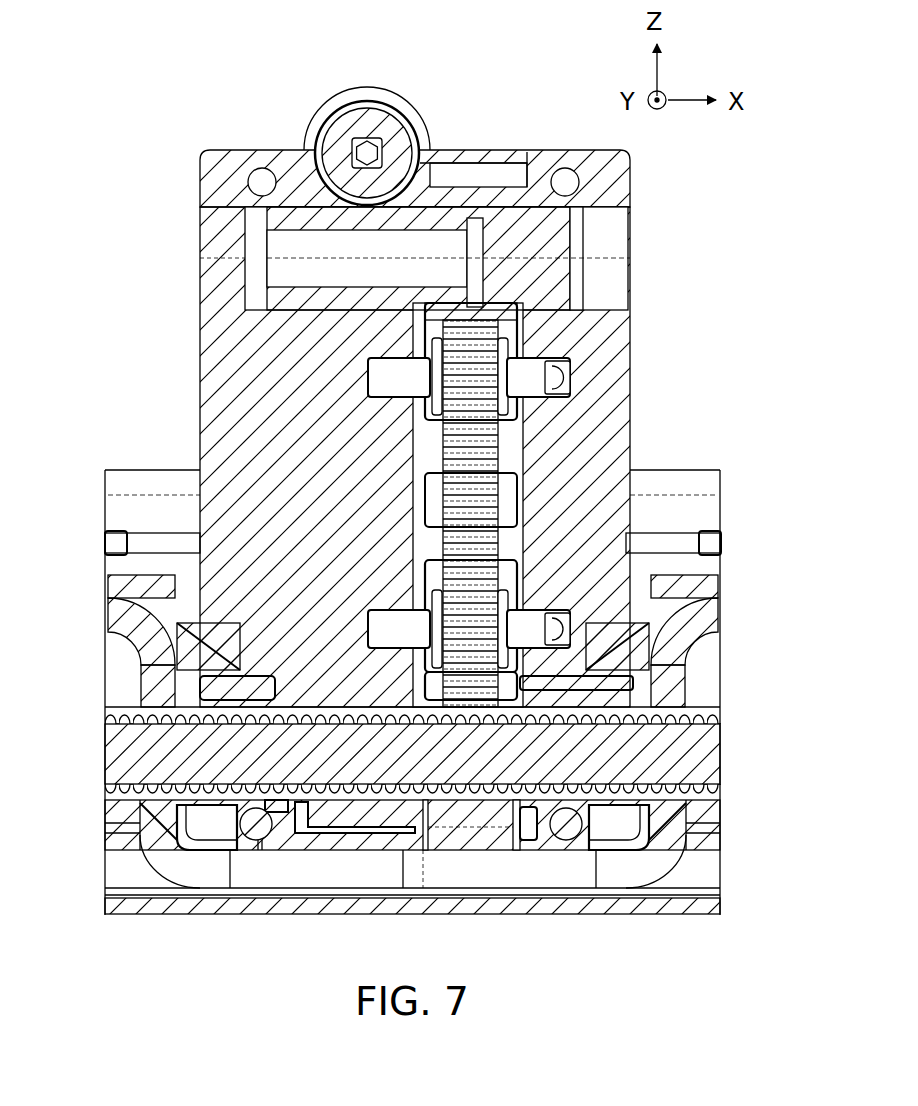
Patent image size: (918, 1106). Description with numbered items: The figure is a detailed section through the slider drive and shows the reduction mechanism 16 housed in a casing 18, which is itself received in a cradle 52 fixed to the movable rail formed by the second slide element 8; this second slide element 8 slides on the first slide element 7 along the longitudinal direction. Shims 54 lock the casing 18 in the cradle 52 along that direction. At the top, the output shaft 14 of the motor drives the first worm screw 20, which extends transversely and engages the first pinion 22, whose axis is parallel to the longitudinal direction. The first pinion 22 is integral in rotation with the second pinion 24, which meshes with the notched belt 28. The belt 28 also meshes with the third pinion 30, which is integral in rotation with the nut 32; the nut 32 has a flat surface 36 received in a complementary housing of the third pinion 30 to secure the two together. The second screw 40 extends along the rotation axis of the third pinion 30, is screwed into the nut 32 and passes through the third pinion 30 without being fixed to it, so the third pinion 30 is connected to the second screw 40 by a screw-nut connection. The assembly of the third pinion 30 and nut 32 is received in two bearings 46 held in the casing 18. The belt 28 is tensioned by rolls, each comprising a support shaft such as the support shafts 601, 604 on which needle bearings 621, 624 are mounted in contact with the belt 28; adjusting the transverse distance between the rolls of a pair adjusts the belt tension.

The reduction mechanism 16 is at (162, 112).
The output shaft 14 is at (370, 150).
The first worm screw 20 is at (348, 130).
The casing 18 is at (475, 152).
The first pinion 22 is at (330, 200).
The second pinion 24 is at (480, 312).
The belt 28 is at (530, 500).
The support shaft 601 is at (405, 380).
The bearing 621 is at (520, 412).
The support shaft 604 is at (388, 628).
The bearing 624 is at (520, 625).
The second slide element 8 is at (127, 587).
The shim 54 is at (195, 652).
The third pinion 30 is at (545, 690).
The second screw 40 is at (180, 750).
The cradle 52 is at (625, 878).
The nut 32 is at (372, 826).
The flat surface 36 is at (475, 700).
The bearing 46 is at (258, 840).
The first slide element 7 is at (178, 910).